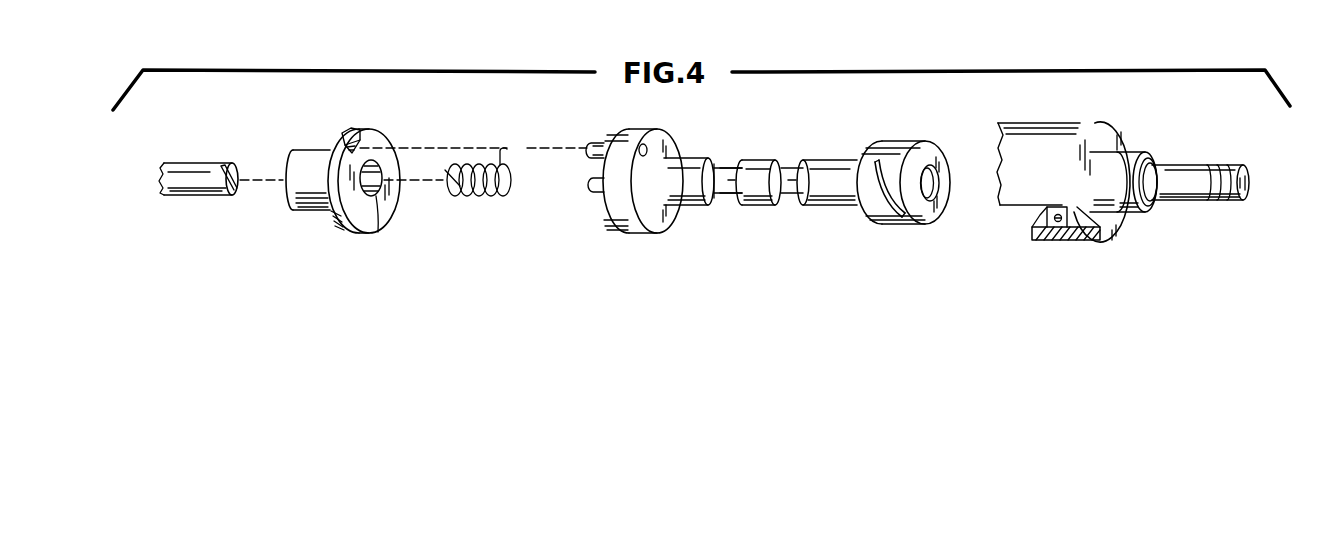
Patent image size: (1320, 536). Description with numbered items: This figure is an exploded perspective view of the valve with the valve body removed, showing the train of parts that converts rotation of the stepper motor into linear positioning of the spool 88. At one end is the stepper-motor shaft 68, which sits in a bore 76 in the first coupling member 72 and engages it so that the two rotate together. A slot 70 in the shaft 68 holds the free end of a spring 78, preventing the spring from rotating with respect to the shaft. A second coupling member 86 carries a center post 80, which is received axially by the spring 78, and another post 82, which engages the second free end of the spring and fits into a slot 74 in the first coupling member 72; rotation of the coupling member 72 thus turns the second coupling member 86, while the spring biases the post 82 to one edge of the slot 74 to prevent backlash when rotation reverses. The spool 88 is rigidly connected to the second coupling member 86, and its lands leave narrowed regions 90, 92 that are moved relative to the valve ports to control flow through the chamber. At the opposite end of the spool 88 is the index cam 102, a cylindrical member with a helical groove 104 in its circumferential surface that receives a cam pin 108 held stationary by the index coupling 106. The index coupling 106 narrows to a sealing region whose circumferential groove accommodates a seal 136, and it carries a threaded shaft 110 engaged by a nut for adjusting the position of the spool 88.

The stepper-motor shaft 68 is at (197, 170).
The slot 70 is at (225, 168).
The coupling member 72 is at (329, 218).
The slot 74 is at (343, 136).
The bore 76 is at (381, 224).
The spring 78 is at (482, 196).
The center post 80 is at (591, 192).
The post 82 is at (596, 143).
The second coupling member 86 is at (631, 238).
The spool 88 is at (767, 212).
The narrowed region 90 is at (733, 160).
The narrowed region 92 is at (797, 162).
The index cam 102 is at (906, 142).
The helical groove 104 is at (890, 222).
The index coupling 106 is at (1079, 125).
The cam pin 108 is at (1058, 226).
The threaded shaft 110 is at (1215, 200).
The seal 136 is at (1137, 153).